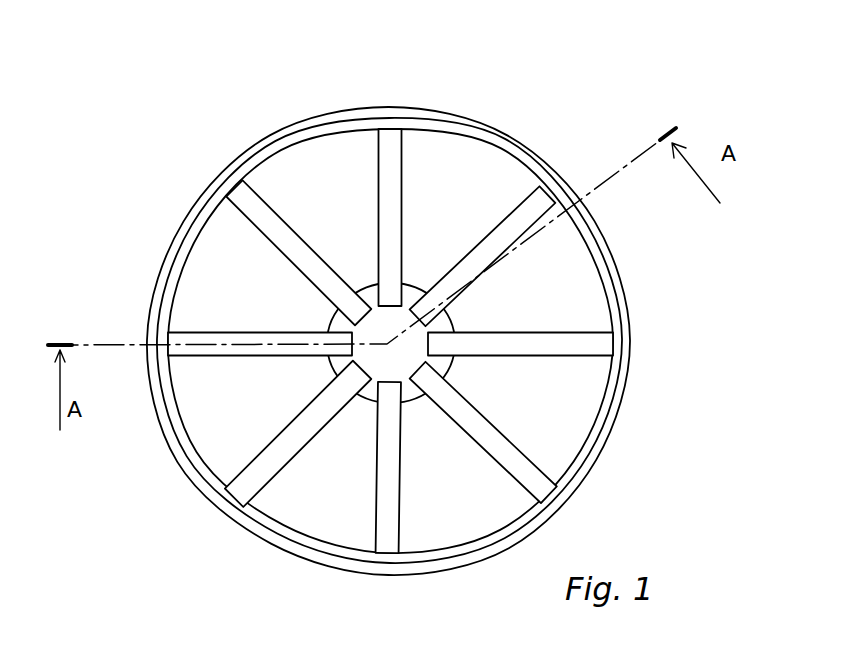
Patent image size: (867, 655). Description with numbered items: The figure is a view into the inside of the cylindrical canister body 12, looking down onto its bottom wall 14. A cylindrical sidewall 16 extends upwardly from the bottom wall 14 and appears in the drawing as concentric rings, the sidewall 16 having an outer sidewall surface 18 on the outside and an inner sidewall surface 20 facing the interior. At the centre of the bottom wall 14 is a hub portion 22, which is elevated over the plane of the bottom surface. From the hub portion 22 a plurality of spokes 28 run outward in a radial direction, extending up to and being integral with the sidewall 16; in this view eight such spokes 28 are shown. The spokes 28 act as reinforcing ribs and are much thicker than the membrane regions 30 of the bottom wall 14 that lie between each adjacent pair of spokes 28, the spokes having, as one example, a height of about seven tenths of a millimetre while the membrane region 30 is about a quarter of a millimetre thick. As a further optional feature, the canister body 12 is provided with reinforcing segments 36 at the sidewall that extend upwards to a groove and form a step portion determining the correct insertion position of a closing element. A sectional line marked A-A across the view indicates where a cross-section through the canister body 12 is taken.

The canister body 12 is at (412, 324).
The bottom wall 14 is at (559, 422).
The sidewall 16 is at (620, 283).
The outer sidewall surface 18 is at (592, 479).
The inner sidewall surface 20 is at (516, 507).
The hub portion 22 is at (385, 367).
The spokes 28 is at (244, 195).
The membrane regions 30 is at (203, 263).
The reinforcing segments 36 is at (613, 342).